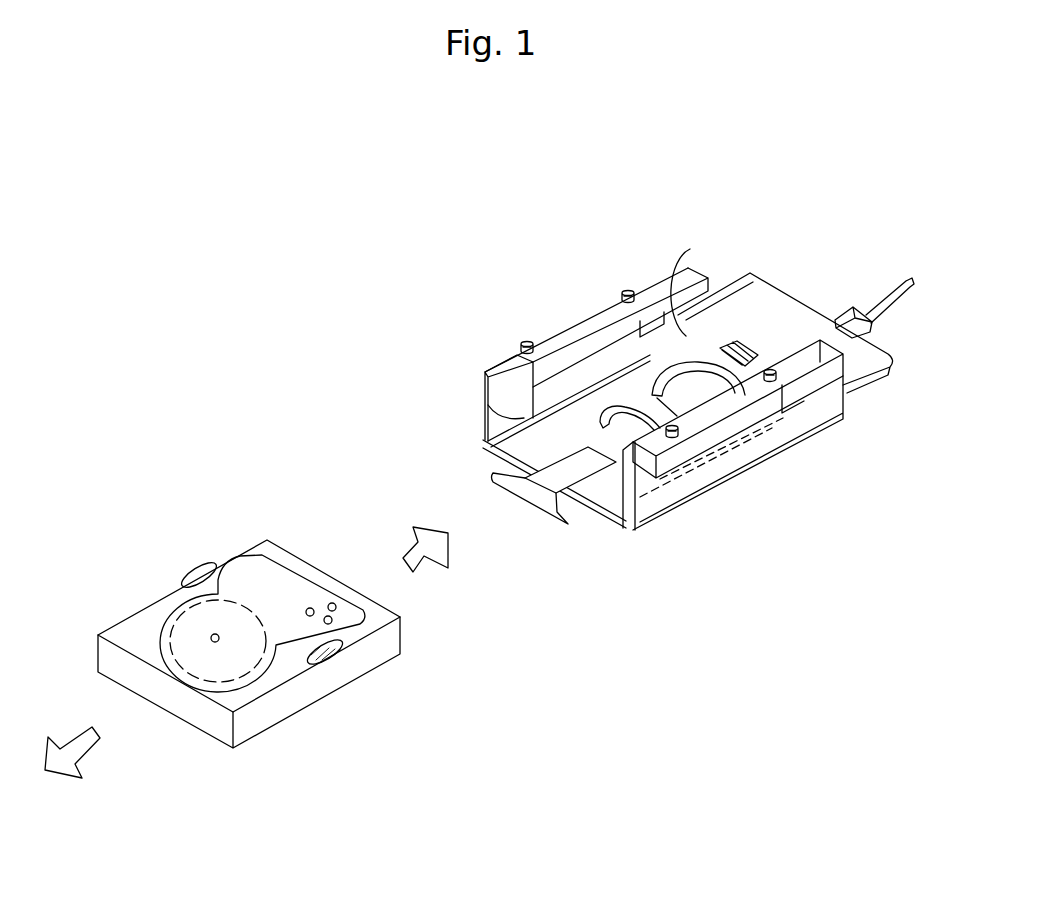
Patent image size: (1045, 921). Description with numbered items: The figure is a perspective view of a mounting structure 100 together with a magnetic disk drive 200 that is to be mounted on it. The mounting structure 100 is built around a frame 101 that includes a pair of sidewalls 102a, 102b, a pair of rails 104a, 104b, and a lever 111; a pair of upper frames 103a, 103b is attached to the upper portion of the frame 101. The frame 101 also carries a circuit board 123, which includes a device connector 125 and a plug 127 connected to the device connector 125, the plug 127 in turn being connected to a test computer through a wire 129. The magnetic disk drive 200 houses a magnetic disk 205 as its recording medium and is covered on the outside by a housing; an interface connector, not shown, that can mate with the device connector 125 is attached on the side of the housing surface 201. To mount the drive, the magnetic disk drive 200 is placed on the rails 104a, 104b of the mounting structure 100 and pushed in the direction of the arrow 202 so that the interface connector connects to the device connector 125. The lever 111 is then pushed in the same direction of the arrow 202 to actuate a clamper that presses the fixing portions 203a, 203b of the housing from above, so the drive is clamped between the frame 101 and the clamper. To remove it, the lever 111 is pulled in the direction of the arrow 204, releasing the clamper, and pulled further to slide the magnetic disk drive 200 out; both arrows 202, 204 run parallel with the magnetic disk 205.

The mounting structure 100 is at (777, 538).
The frame 101 is at (484, 440).
The sidewall 102a is at (482, 406).
The sidewall 102b is at (700, 442).
The upper frame 103a is at (600, 320).
The upper frame 103b is at (798, 360).
The rail 104a is at (492, 418).
The rail 104b is at (670, 486).
The lever 111 is at (567, 523).
The circuit board 123 is at (772, 298).
The device connector 125 is at (718, 229).
The plug 127 is at (873, 328).
The wire 129 is at (907, 283).
The magnetic disk drive 200 is at (345, 721).
The surface of the housing 201 is at (392, 600).
The arrow 202 is at (421, 547).
The fixing portion 203a is at (200, 565).
The fixing portion 203b is at (338, 655).
The arrow 204 is at (80, 742).
The magnetic disk 205 is at (172, 611).